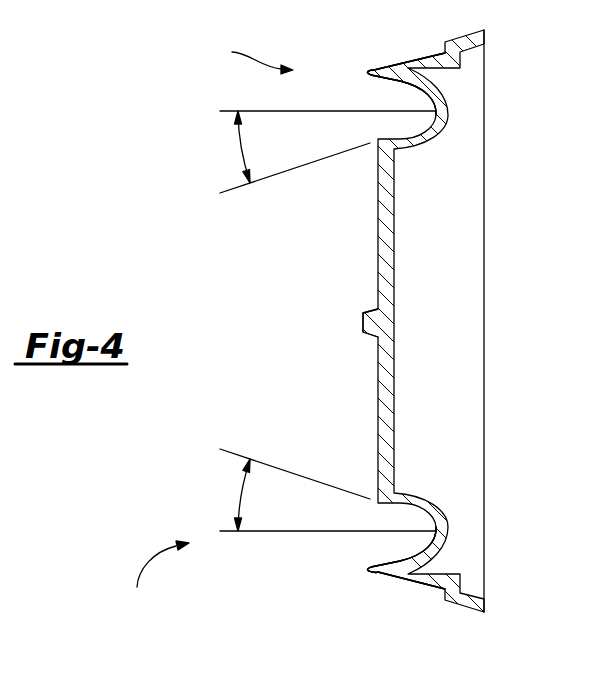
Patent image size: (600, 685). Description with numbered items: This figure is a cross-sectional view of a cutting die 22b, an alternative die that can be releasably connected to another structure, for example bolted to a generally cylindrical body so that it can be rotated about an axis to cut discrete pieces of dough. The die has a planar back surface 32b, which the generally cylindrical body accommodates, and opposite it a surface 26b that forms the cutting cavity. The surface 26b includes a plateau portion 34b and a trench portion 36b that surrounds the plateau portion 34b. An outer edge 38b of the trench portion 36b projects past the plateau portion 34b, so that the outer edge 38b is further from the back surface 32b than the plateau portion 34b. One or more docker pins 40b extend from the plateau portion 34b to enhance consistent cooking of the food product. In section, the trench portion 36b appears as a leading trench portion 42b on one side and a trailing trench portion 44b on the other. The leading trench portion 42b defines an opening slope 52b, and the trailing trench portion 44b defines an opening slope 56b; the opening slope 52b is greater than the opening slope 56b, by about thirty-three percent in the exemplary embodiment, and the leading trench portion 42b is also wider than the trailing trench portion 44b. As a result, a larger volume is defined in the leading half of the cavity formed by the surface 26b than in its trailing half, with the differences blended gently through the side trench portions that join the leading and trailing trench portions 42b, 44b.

The cutting die 22b is at (153, 578).
The surface 26b is at (247, 57).
The back surface 32b is at (485, 476).
The plateau portion 34b is at (378, 400).
The trench portion 36b is at (406, 321).
The outer edge 38b is at (368, 69).
The docker pin 40b is at (363, 323).
The leading trench portion 42b is at (412, 556).
The trailing trench portion 44b is at (412, 85).
The opening slope 52b is at (240, 496).
The opening slope 56b is at (238, 154).